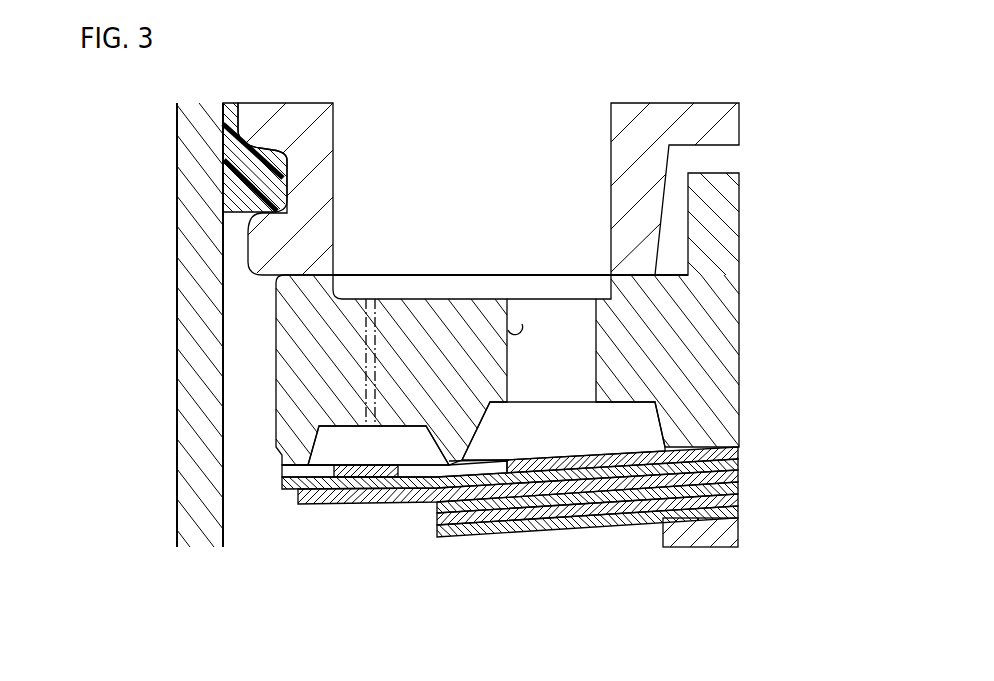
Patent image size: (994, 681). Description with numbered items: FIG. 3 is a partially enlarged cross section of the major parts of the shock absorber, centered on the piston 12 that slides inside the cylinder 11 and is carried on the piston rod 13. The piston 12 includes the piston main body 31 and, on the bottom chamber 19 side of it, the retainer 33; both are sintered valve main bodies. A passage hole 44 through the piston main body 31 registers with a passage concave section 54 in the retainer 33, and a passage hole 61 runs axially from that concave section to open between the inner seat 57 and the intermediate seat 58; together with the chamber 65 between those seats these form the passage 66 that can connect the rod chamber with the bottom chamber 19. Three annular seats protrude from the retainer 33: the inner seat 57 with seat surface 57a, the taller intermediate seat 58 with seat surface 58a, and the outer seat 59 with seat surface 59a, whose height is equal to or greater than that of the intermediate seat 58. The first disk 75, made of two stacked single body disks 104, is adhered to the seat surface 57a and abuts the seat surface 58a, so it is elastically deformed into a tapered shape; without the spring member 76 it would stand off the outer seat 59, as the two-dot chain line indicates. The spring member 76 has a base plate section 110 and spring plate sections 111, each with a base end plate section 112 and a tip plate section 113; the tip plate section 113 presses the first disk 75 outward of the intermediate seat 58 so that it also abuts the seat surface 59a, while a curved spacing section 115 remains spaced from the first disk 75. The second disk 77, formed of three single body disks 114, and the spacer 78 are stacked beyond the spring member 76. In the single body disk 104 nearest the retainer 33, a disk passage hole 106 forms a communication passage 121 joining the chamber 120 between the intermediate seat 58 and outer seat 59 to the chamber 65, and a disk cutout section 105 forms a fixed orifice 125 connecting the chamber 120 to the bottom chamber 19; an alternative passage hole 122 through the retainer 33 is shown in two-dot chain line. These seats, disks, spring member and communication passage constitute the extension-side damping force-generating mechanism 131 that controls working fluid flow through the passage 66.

The cylinder 11 is at (166, 136).
The piston 12 is at (210, 126).
The piston rod 13 is at (735, 132).
The bottom chamber 19 is at (237, 347).
The piston main body 31 is at (285, 163).
The retainer 33 is at (740, 345).
The passage hole 44 is at (566, 130).
The passage concave section 54 is at (480, 296).
The inner seat 57 is at (700, 440).
The seat surface 57a is at (689, 447).
The intermediate seat 58 is at (328, 445).
The seat surface 58a is at (452, 467).
The outer seat 59 is at (315, 470).
The seat surface 59a is at (304, 492).
The passage hole 61 is at (508, 330).
The chamber 65 is at (566, 432).
The passage 66 is at (515, 140).
The first disk 75 is at (736, 468).
The spring member 76 is at (738, 478).
The second disk 77 is at (738, 503).
The spacer 78 is at (734, 535).
The single body disk 104 is at (734, 452).
The disk cutout section 105 is at (290, 471).
The disk passage hole 106 is at (437, 462).
The base plate section 110 is at (517, 495).
The spring plate section 111 is at (362, 480).
The base end plate section 112 is at (385, 505).
The tip plate section 113 is at (340, 495).
The single body disk 114 is at (736, 512).
The spacing section 115 is at (397, 505).
The chamber 120 is at (338, 515).
The communication passage 121 is at (377, 413).
The passage hole 122 is at (380, 412).
The fixed orifice 125 is at (360, 470).
The damping force-generating mechanism 131 is at (284, 522).